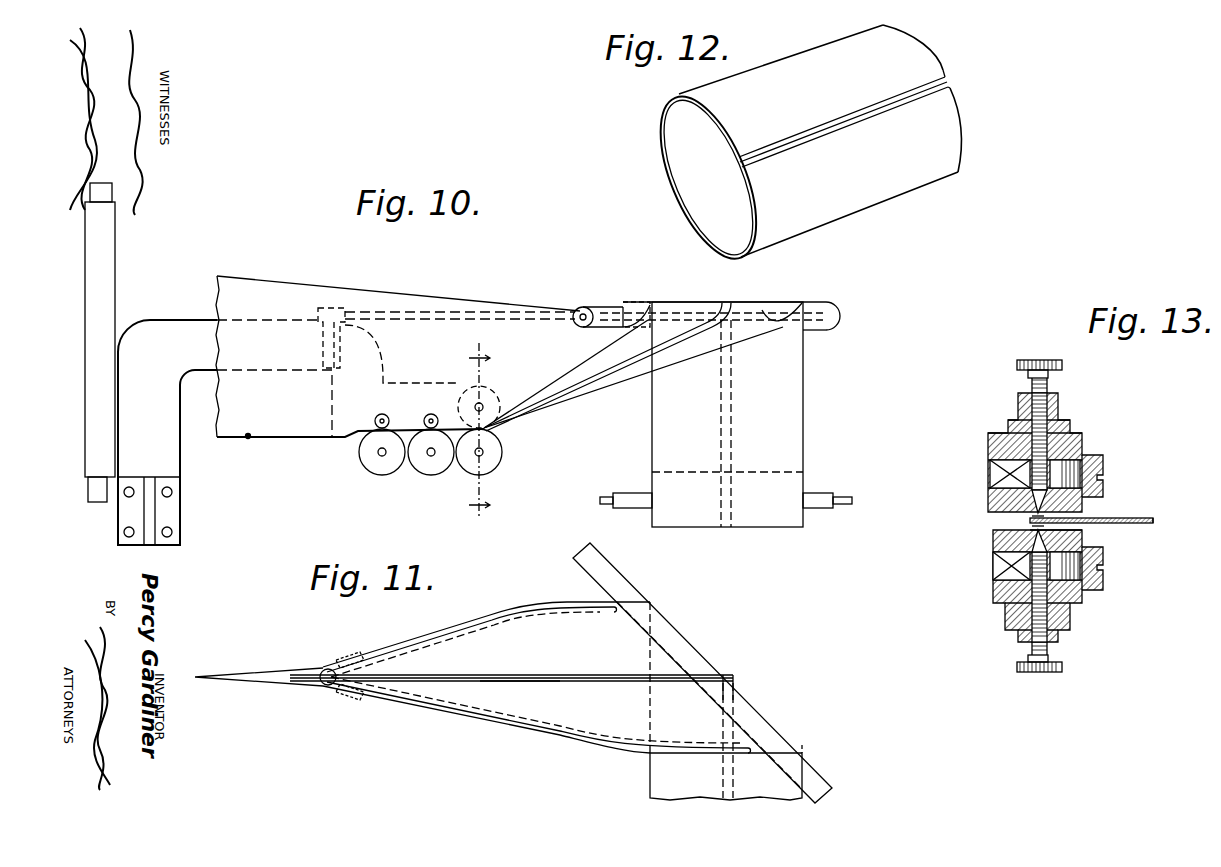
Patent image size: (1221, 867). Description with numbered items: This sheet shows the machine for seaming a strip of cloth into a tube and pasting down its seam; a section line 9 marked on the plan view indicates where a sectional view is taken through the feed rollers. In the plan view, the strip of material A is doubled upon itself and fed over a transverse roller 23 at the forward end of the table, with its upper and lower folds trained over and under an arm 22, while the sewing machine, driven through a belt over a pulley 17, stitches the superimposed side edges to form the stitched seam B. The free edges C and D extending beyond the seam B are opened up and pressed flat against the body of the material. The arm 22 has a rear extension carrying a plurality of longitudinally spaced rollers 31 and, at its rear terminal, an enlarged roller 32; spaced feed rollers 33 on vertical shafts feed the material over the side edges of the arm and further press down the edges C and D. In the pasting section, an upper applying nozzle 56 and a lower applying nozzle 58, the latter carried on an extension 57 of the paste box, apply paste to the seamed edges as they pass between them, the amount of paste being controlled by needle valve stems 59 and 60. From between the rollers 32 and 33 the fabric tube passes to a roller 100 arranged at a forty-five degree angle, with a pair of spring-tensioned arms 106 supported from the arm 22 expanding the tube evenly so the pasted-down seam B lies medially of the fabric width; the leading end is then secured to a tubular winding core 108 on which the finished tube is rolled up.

In FIG. 10, the roller 23 is at (85, 320).
In FIG. 10, the arm 22 is at (170, 327).
In FIG. 10, the strip of cloth or material A is at (260, 298).
In FIG. 13, the strip of cloth or material A is at (1150, 520).
In FIG. 10, the stitched seam B is at (276, 440).
In FIG. 11, the stitched seam B is at (558, 674).
In FIG. 10, the pulley 17 is at (247, 440).
In FIG. 10, the applying nozzle 56 is at (305, 438).
In FIG. 13, the applying nozzle 56 is at (1085, 512).
In FIG. 10, the applying nozzle 58 is at (320, 438).
In FIG. 13, the applying nozzle 58 is at (1085, 537).
In FIG. 10, the spring-tensioned arms 106 is at (476, 312).
In FIG. 11, the spring-tensioned arms 106 is at (480, 616).
In FIG. 10, the section line 9- 9 is at (479, 429).
In FIG. 10, the enlarged roller 32 is at (486, 400).
In FIG. 10, the rollers 31 is at (389, 405).
In FIG. 10, the feed rollers 33 is at (382, 475).
In FIG. 10, the free edge C is at (600, 372).
In FIG. 11, the free edge C is at (515, 674).
In FIG. 13, the free edge C is at (1030, 519).
In FIG. 10, the free edge D is at (628, 372).
In FIG. 11, the free edge D is at (513, 683).
In FIG. 13, the free edge D is at (1030, 526).
In FIG. 10, the angularly disposed roller 100 is at (826, 312).
In FIG. 11, the angularly disposed roller 100 is at (626, 590).
In FIG. 10, the winding core 108 is at (818, 500).
In FIG. 13, the needle valve stem 60 is at (1020, 618).
In FIG. 13, the extension 57 is at (1000, 480).
In FIG. 13, the needle valve stem 59 is at (1070, 430).